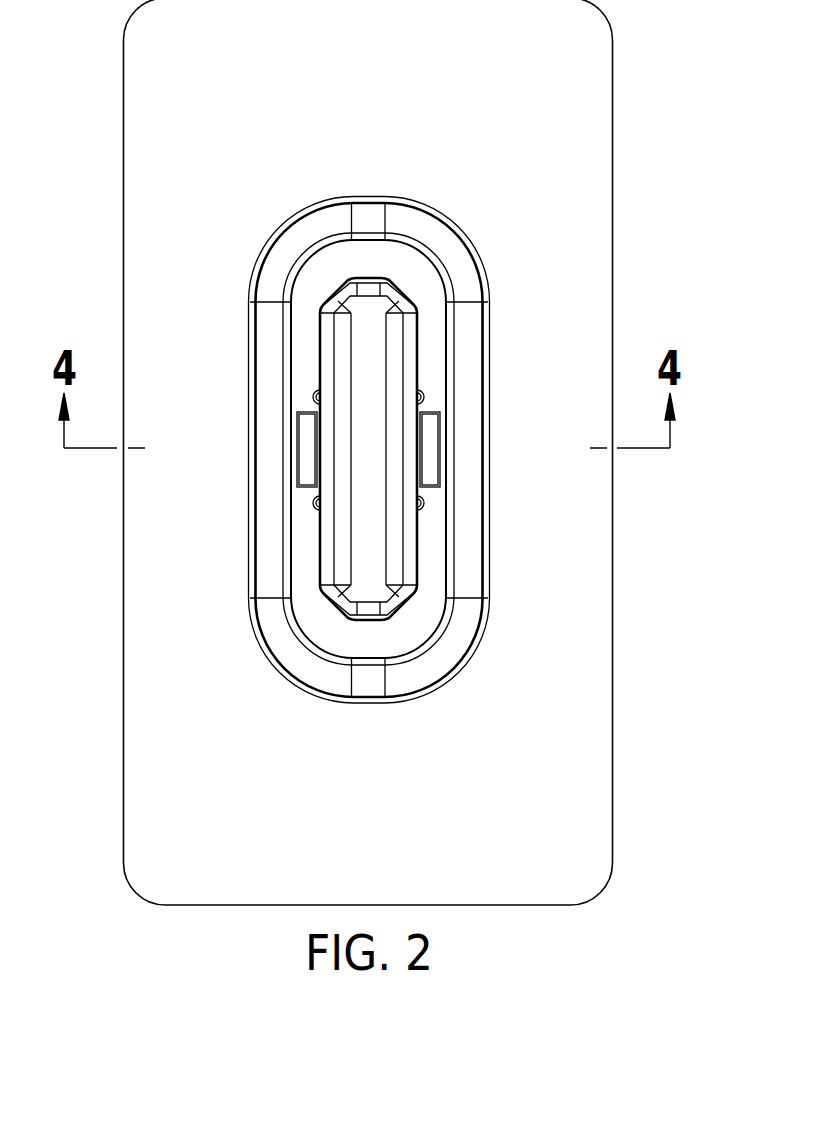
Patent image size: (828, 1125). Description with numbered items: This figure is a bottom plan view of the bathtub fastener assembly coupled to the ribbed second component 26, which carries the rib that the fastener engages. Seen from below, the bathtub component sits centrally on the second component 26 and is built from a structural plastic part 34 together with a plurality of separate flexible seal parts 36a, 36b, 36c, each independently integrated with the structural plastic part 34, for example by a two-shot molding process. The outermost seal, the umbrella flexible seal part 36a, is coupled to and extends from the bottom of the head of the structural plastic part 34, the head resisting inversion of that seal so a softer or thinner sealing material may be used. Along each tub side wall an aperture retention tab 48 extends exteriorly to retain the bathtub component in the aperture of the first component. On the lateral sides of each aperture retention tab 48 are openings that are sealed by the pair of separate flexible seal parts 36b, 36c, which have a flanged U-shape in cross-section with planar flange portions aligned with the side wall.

The second component 26 is at (622, 164).
The structural plastic part 34 is at (367, 261).
The umbrella flexible seal part 36a is at (453, 263).
The flexible seal part 36b is at (311, 397).
The flexible seal part 36c is at (311, 503).
The aperture retention tab 48 is at (306, 453).